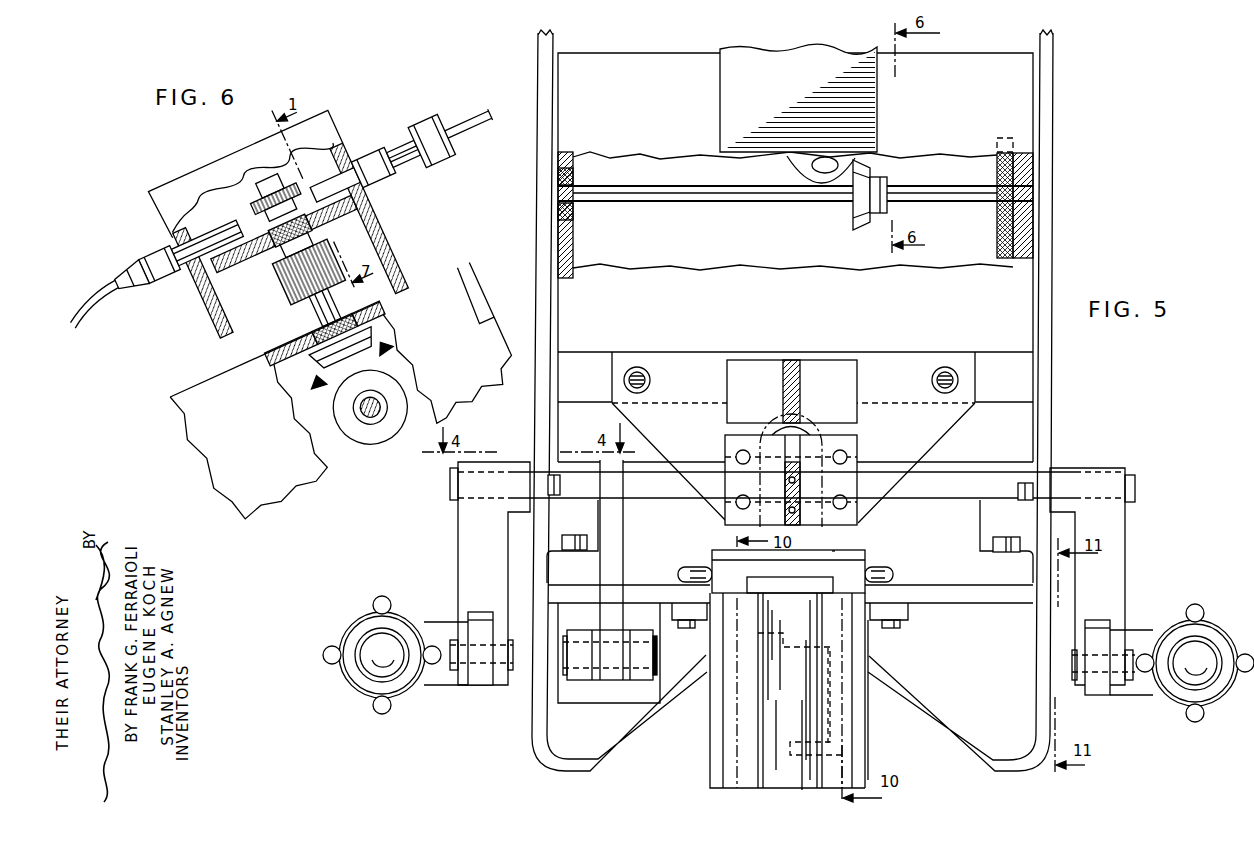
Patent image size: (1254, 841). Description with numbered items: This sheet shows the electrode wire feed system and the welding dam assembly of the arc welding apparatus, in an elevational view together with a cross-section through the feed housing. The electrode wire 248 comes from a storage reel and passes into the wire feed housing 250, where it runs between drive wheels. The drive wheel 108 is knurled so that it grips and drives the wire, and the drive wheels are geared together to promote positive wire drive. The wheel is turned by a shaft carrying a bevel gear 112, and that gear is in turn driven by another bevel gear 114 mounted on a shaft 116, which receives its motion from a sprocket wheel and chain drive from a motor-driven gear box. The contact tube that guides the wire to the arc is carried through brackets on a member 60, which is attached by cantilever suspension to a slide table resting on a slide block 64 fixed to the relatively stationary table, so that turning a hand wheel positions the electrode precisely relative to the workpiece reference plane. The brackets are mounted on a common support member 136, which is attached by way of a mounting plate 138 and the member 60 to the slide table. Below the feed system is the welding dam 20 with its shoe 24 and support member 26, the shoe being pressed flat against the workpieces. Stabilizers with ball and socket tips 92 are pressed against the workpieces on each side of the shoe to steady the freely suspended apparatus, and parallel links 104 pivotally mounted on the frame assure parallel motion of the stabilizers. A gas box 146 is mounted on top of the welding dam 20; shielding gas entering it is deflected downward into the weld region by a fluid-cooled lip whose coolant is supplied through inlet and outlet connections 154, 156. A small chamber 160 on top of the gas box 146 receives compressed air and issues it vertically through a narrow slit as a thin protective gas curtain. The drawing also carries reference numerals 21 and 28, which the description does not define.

In FIG. 5, the welding dam 20 is at (703, 777).
In FIG. 5, the column core 21 is at (806, 625).
In FIG. 5, the shoe 24 is at (845, 651).
In FIG. 5, the support member 26 is at (860, 696).
In FIG. 5, the guide rails 28 is at (538, 227).
In FIG. 5, the member 60 is at (785, 319).
In FIG. 5, the slide block 64 is at (1020, 426).
In FIG. 5, the ball and socket tips 92 is at (370, 623).
In FIG. 5, the parallel link 104 is at (468, 542).
In FIG. 6, the drive wheel 108 is at (251, 224).
In FIG. 5, the bevel gear 112 is at (787, 163).
In FIG. 6, the bevel gear 112 is at (353, 392).
In FIG. 5, the bevel gear 114 is at (860, 230).
In FIG. 6, the bevel gear 114 is at (360, 462).
In FIG. 5, the shaft 116 is at (687, 198).
In FIG. 6, the shaft 116 is at (369, 419).
In FIG. 5, the common support member 136 is at (923, 433).
In FIG. 5, the mounting plate 138 is at (1017, 376).
In FIG. 5, the gas box 146 is at (853, 573).
In FIG. 5, the inlet connection 154 is at (695, 572).
In FIG. 5, the outlet connection 156 is at (893, 577).
In FIG. 5, the small chamber 160 is at (835, 545).
In FIG. 6, the electrode wire 248 is at (482, 98).
In FIG. 5, the wire feed housing 250 is at (880, 113).
In FIG. 6, the wire feed housing 250 is at (327, 128).